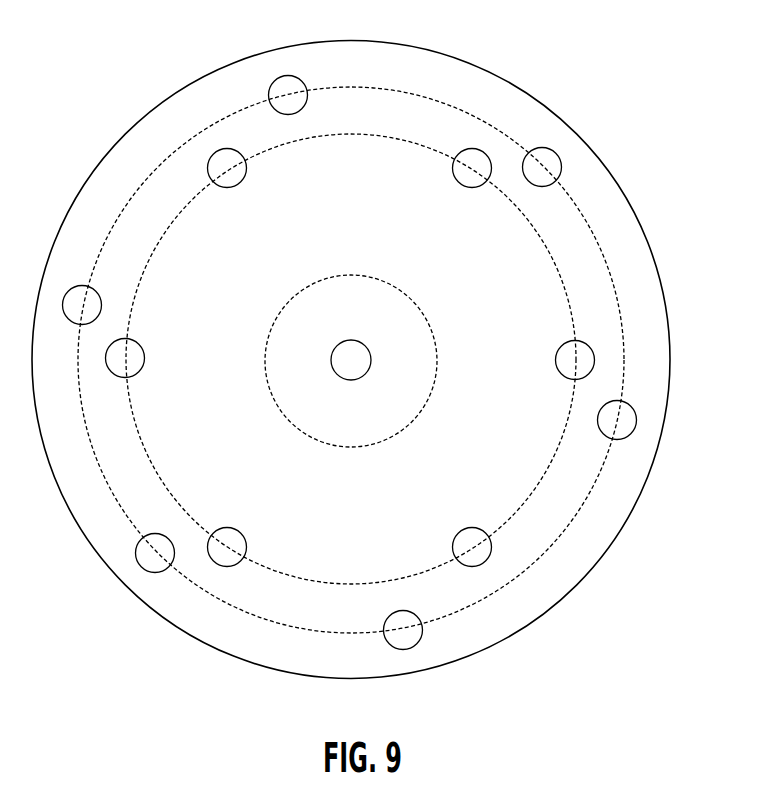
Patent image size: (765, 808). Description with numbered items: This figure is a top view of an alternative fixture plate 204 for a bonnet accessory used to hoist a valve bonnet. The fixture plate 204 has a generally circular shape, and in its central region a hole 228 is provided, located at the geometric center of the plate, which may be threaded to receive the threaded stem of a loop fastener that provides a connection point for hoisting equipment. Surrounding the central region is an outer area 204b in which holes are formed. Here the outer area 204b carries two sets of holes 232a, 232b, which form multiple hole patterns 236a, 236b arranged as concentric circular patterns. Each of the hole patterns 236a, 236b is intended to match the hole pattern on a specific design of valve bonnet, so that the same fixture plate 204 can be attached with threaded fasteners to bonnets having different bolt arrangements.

The fixture plate 204 is at (615, 182).
The outer area 204b is at (351, 394).
The hole 228 is at (362, 348).
The holes 232a is at (555, 158).
The holes 232b is at (588, 353).
The hole pattern 236a is at (248, 107).
The hole pattern 236b is at (417, 143).